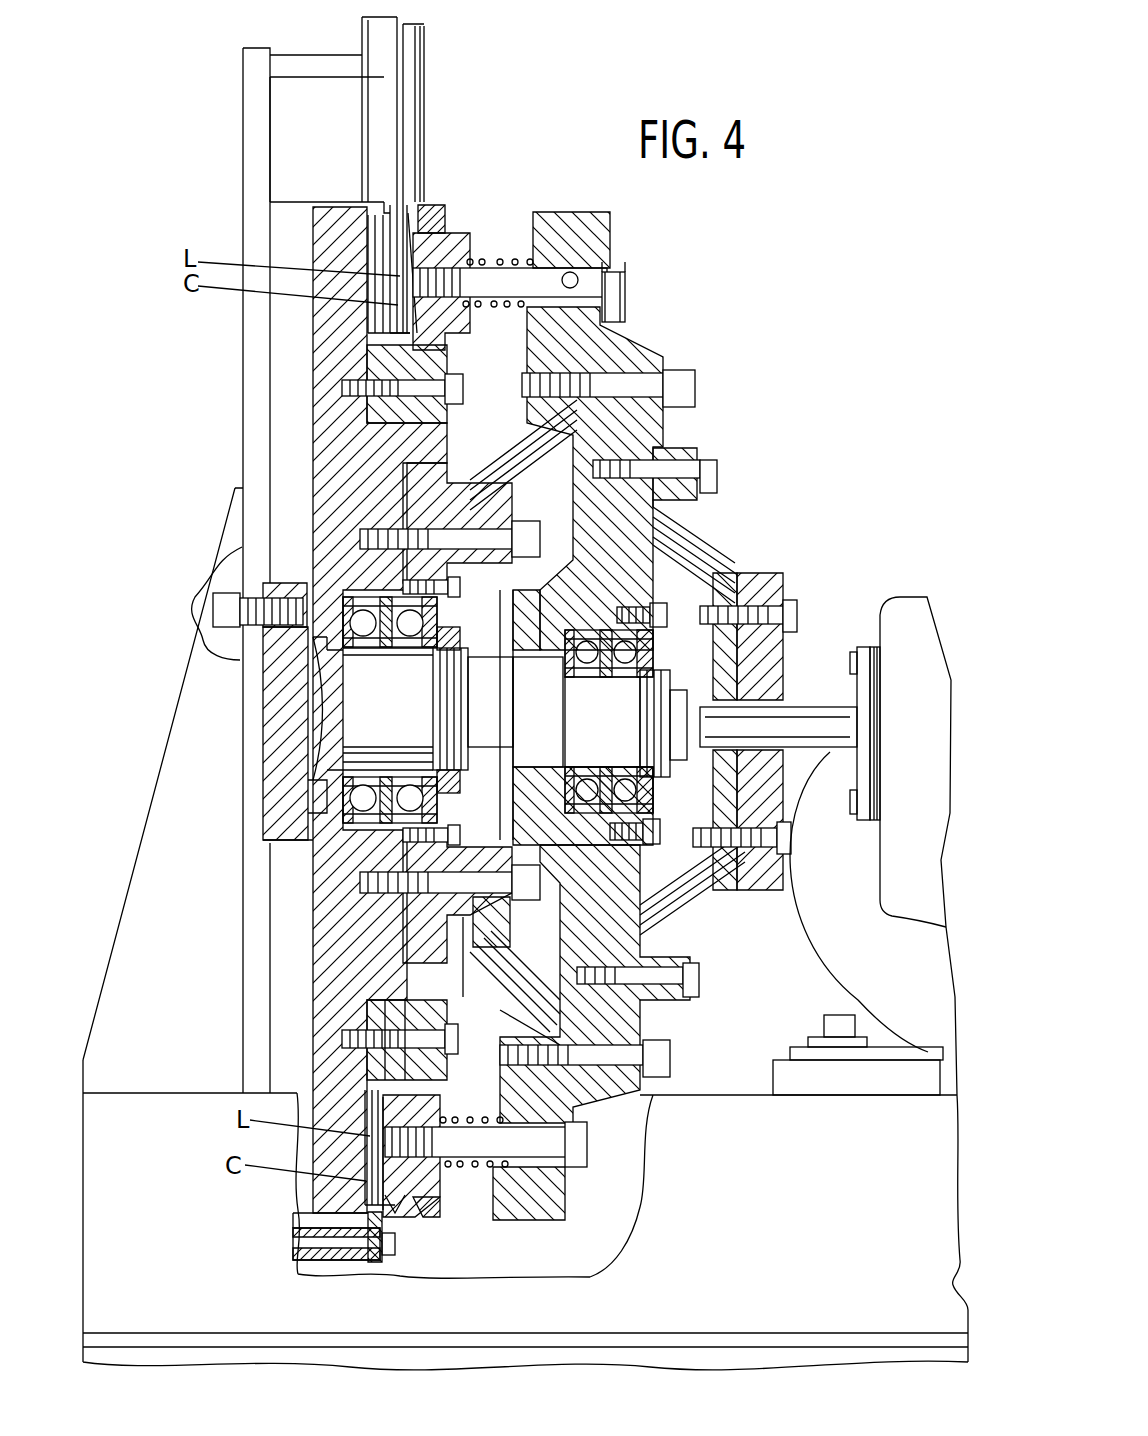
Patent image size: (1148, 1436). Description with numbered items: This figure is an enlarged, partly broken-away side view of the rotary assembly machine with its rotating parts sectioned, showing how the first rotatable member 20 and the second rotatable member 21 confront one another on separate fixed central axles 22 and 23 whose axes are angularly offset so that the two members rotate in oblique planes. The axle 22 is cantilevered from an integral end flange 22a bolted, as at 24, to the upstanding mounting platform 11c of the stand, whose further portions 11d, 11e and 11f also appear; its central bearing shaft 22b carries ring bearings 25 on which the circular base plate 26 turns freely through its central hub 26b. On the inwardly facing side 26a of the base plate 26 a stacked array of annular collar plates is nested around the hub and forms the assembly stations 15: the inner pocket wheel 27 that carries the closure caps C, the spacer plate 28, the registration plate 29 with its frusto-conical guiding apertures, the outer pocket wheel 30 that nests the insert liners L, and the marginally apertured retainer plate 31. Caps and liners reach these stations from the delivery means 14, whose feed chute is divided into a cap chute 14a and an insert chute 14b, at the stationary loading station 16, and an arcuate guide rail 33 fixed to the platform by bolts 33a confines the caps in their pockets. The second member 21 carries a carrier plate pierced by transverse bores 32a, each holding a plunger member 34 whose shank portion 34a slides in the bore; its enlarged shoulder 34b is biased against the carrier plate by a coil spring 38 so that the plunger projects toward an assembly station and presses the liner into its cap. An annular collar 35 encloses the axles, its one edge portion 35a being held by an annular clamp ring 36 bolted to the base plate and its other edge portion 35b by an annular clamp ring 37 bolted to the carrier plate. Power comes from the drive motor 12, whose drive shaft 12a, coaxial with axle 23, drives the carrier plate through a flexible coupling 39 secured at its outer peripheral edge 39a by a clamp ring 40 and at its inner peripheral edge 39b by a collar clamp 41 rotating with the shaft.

The mounting platform 11c is at (243, 238).
The base 11d is at (858, 1225).
The retainer plate 11e is at (330, 1260).
The frame wall 11f is at (305, 122).
The drive motor 12 is at (930, 784).
The drive shaft 12a is at (802, 722).
The delivery means 14 is at (322, 39).
The cap chute 14a is at (383, 77).
The insert chute 14b is at (410, 90).
The assembly stations 15 is at (464, 226).
The loading station 16 is at (441, 192).
The first rotatable member 20 is at (300, 505).
The second rotatable member 21 is at (760, 452).
The fixed central axle 22 is at (406, 726).
The end flange 22a is at (263, 675).
The central bearing shaft 22b is at (342, 643).
The fixed central axle 23 is at (613, 728).
The bolt 24 is at (196, 597).
The ring bearings 25 is at (428, 618).
The base plate 26 is at (312, 880).
The inwardly facing side 26a is at (370, 352).
The central hub 26b is at (447, 447).
The inner pocket wheel 27 is at (372, 1000).
The spacer plate 28 is at (410, 1005).
The registration plate 29 is at (398, 1202).
The outer pocket wheel 30 is at (400, 1000).
The retainer plate 31 is at (428, 1208).
The bores 32a is at (572, 275).
The arcuate guide rail 33 is at (383, 1262).
The bolts 33a is at (396, 1255).
The plunger member 34 is at (626, 298).
The shank portion 34a is at (603, 262).
The shoulder 34b is at (620, 265).
The annular collar 35 is at (510, 1025).
The peripheral edge portion 35a is at (463, 925).
The peripheral edge portion 35b is at (540, 1047).
The annular clamp ring 36 is at (512, 520).
The annular clamp ring 37 is at (527, 357).
The coil spring 38 is at (486, 713).
The flexible coupling 39 is at (713, 522).
The outer peripheral edge 39a is at (665, 458).
The inner peripheral edge 39b is at (738, 575).
The clamp ring 40 is at (736, 455).
The collar clamp 41 is at (785, 578).